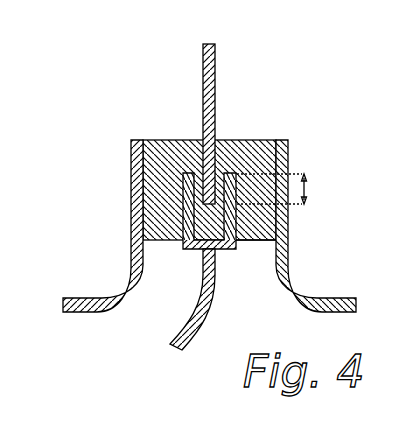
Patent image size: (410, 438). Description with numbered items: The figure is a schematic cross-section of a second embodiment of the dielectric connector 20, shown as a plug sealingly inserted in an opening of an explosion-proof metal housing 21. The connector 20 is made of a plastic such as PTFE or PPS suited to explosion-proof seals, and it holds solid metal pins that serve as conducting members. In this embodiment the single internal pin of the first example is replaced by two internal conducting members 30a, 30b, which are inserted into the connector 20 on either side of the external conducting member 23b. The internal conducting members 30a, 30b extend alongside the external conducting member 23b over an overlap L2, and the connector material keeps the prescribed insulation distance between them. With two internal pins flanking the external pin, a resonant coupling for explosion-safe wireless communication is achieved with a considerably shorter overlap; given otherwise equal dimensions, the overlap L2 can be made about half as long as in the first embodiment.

The dielectric connector 20 is at (158, 142).
The explosion-proof metal housing 21 is at (131, 177).
The external conducting member 23b is at (214, 157).
The internal conducting member 30a is at (168, 240).
The internal conducting member 30b is at (255, 240).
The overlap L2 is at (289, 193).